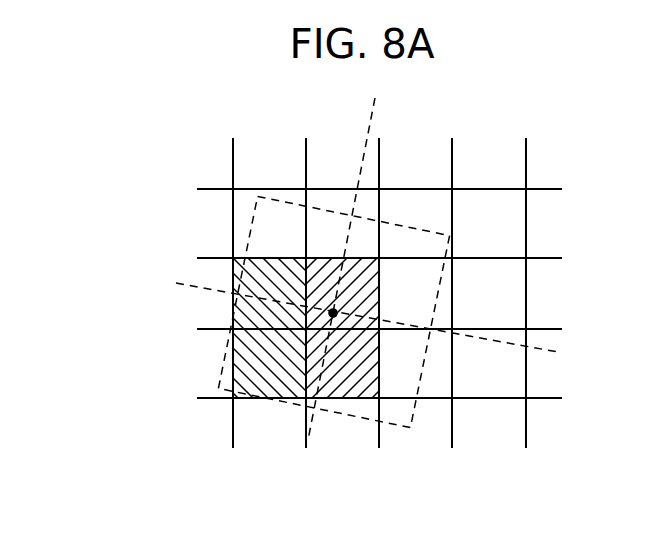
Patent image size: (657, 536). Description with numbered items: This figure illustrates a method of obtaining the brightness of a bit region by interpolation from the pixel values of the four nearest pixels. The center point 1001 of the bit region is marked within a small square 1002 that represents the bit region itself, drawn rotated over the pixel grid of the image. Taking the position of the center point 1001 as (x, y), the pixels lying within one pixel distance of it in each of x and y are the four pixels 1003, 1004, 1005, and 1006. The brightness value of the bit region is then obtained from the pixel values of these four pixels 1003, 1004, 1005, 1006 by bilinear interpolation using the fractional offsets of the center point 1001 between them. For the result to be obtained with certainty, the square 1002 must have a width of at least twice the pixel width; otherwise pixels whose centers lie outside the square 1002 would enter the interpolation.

The center point of the bit region 1001 is at (333, 313).
The small square bit region 1002 is at (232, 380).
The pixel 1003 is at (335, 313).
The pixel 1004 is at (362, 357).
The pixel 1005 is at (238, 287).
The pixel 1006 is at (272, 380).